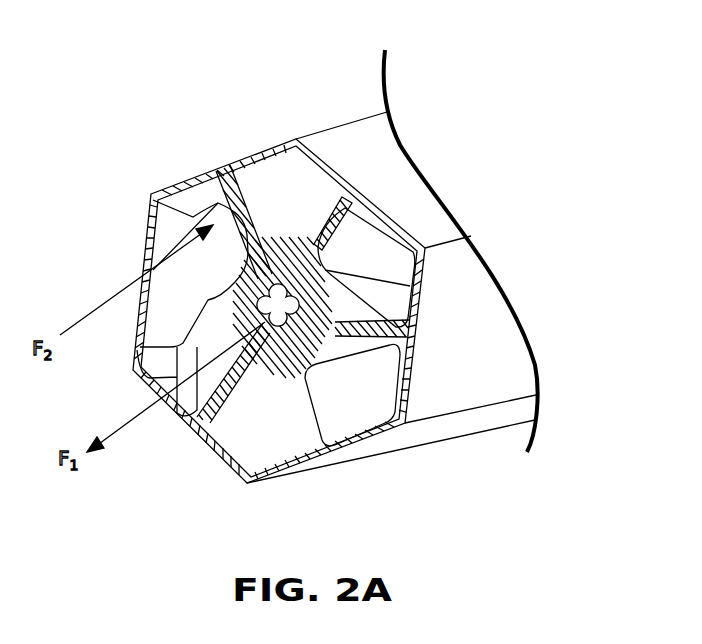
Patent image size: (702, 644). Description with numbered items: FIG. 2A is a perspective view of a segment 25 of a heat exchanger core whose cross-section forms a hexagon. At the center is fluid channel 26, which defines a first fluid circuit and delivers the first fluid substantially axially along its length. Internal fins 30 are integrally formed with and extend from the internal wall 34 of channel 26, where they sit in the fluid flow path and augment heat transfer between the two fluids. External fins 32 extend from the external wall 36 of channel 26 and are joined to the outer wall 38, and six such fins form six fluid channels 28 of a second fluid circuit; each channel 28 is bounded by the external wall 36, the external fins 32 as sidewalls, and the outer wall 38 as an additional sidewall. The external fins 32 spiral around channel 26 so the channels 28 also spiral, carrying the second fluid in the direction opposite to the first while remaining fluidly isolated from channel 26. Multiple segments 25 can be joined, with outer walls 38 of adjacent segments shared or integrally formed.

The segment 25 is at (175, 84).
The fluid channel 26 is at (327, 340).
The fluid channels 28 is at (390, 369).
The internal fins 30 is at (257, 245).
The external fins 32 is at (345, 200).
The internal wall 34 is at (262, 376).
The external wall 36 is at (247, 484).
The outer wall 38 is at (233, 185).